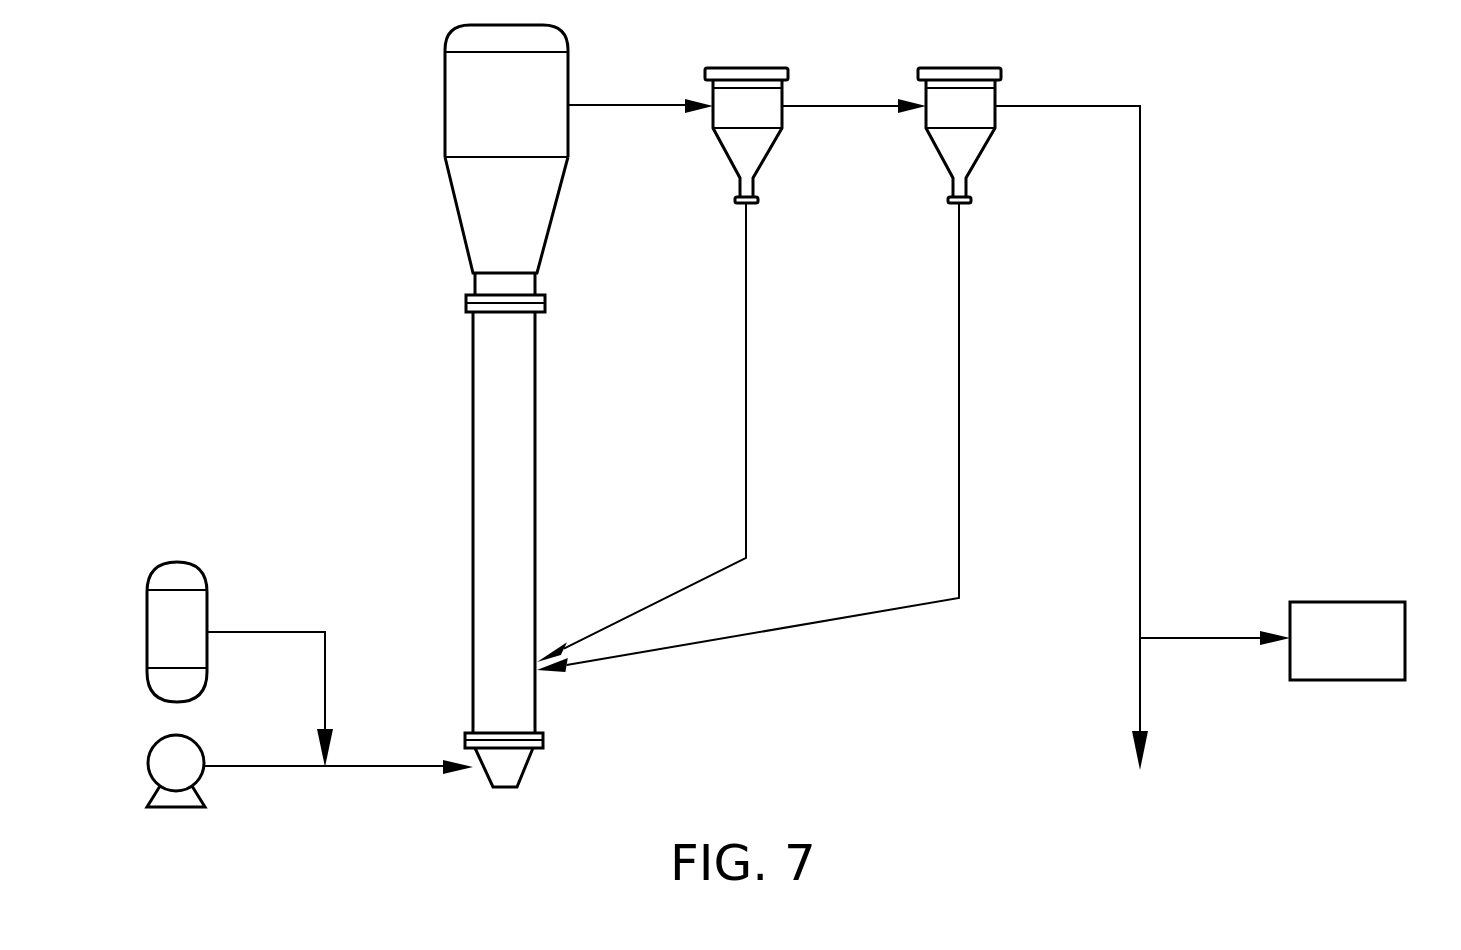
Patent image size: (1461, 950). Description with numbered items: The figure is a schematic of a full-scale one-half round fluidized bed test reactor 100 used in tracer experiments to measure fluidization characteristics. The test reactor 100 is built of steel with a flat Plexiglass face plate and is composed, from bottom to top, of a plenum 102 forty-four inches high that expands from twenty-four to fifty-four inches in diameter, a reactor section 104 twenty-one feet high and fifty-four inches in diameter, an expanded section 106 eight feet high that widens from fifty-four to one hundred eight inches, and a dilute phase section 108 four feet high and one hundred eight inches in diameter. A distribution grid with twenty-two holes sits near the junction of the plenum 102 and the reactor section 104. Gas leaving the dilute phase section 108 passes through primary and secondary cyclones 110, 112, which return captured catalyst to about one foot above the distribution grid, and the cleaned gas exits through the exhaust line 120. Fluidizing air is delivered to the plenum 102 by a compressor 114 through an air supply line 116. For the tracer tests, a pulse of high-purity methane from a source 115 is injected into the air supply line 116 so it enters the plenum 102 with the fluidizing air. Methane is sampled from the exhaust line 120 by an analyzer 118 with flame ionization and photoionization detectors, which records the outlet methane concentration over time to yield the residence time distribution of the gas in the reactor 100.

The test reactor 100 is at (455, 380).
The plenum 102 is at (513, 762).
The reactor section 104 is at (523, 437).
The expanded section 106 is at (543, 220).
The dilute phase section 108 is at (463, 103).
The primary cyclone 110 is at (772, 68).
The secondary cyclone 112 is at (985, 68).
The compressor 114 is at (148, 760).
The source 115 is at (148, 585).
The air supply line 116 is at (355, 767).
The analyzer 118 is at (1378, 602).
The exhaust line 120 is at (1140, 440).